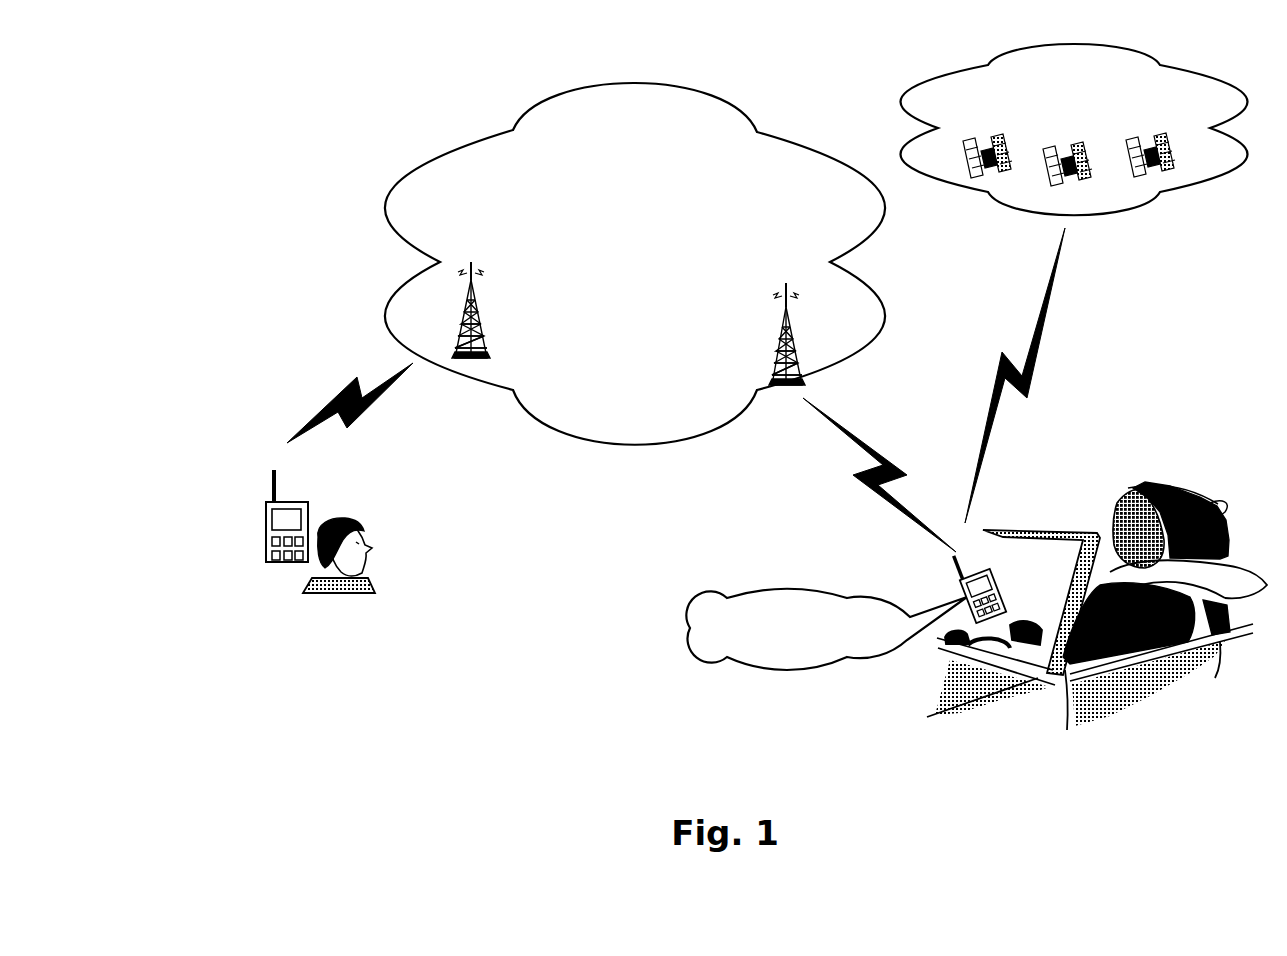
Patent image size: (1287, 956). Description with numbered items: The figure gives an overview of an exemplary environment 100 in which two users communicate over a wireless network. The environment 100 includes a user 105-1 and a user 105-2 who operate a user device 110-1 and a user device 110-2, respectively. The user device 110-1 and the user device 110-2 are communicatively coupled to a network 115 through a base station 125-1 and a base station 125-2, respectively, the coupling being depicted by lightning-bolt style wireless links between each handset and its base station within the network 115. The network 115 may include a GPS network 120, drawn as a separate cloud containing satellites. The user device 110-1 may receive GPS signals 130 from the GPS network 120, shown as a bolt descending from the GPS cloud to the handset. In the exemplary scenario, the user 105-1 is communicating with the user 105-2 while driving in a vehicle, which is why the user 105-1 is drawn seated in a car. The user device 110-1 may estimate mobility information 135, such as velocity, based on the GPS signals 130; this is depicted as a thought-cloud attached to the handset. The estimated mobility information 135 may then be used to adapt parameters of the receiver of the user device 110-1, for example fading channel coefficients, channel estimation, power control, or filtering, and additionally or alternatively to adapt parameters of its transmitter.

The environment 100 is at (312, 114).
The user 105-1 is at (1147, 483).
The user 105-2 is at (351, 528).
The user device 110-1 is at (963, 582).
The user device 110-2 is at (265, 506).
The network 115 is at (635, 264).
The GPS network 120 is at (1074, 129).
The base station 125-1 is at (741, 334).
The base station 125-2 is at (517, 316).
The GPS signals 130 is at (1081, 375).
The mobility information 135 is at (826, 629).